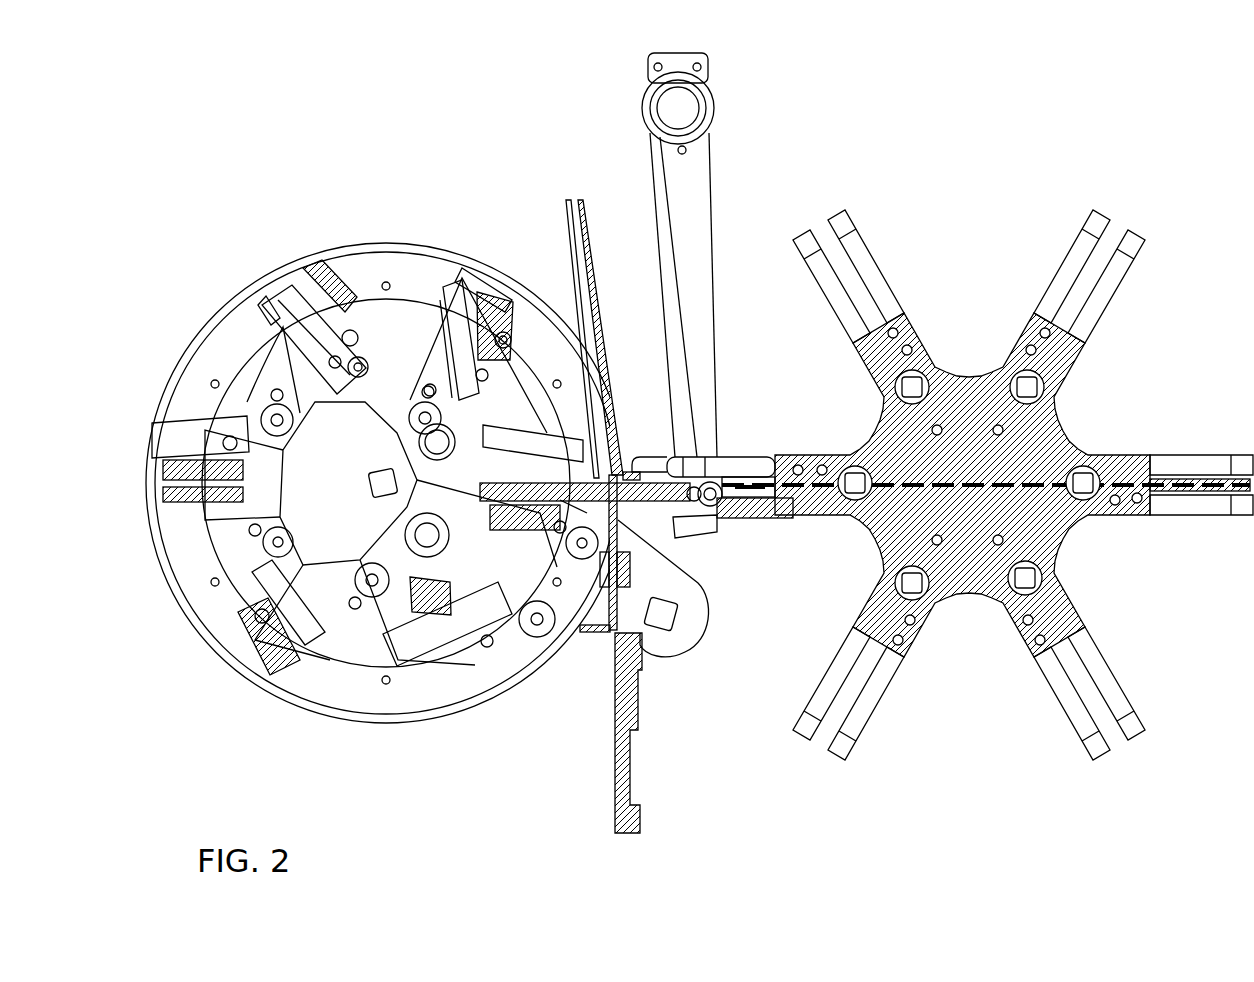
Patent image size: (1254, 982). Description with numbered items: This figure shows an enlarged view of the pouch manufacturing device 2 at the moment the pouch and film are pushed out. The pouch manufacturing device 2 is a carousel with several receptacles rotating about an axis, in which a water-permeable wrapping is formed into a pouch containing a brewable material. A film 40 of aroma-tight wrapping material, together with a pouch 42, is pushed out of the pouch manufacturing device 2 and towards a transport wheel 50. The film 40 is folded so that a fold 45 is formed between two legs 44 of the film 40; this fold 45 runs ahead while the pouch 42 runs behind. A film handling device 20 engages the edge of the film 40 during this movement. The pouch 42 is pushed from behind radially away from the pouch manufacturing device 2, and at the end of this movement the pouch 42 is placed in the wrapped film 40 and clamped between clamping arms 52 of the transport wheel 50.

The pouch manufacturing device 2 is at (390, 264).
The film handling device 20 is at (722, 180).
The film 40 is at (652, 524).
The pouch 42 is at (625, 466).
The legs 44 is at (662, 457).
The fold 45 is at (735, 520).
The transport wheel 50 is at (946, 305).
The clamping arms 52 is at (753, 453).